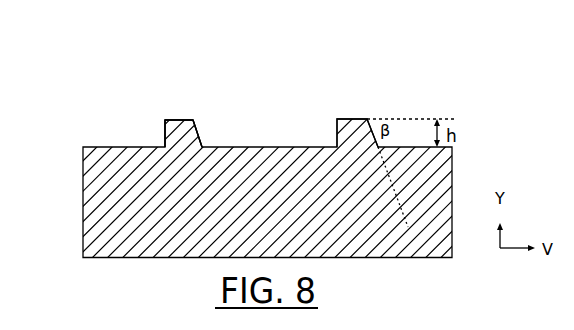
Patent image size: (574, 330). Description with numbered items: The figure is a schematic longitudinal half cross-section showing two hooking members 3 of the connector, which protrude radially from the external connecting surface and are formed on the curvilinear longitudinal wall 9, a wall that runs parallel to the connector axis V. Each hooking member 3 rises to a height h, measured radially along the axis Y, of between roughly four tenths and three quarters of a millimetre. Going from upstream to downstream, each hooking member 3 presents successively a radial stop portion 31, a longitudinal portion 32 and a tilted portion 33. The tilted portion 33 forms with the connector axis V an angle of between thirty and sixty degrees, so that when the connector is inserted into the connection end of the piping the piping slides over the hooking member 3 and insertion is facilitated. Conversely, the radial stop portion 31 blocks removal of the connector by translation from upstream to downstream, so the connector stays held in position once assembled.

The hooking member 3 is at (131, 61).
The curvilinear longitudinal wall 9 is at (263, 147).
The radial stop portion 31 is at (165, 130).
The longitudinal portion 32 is at (171, 118).
The tilted portion 33 is at (199, 132).